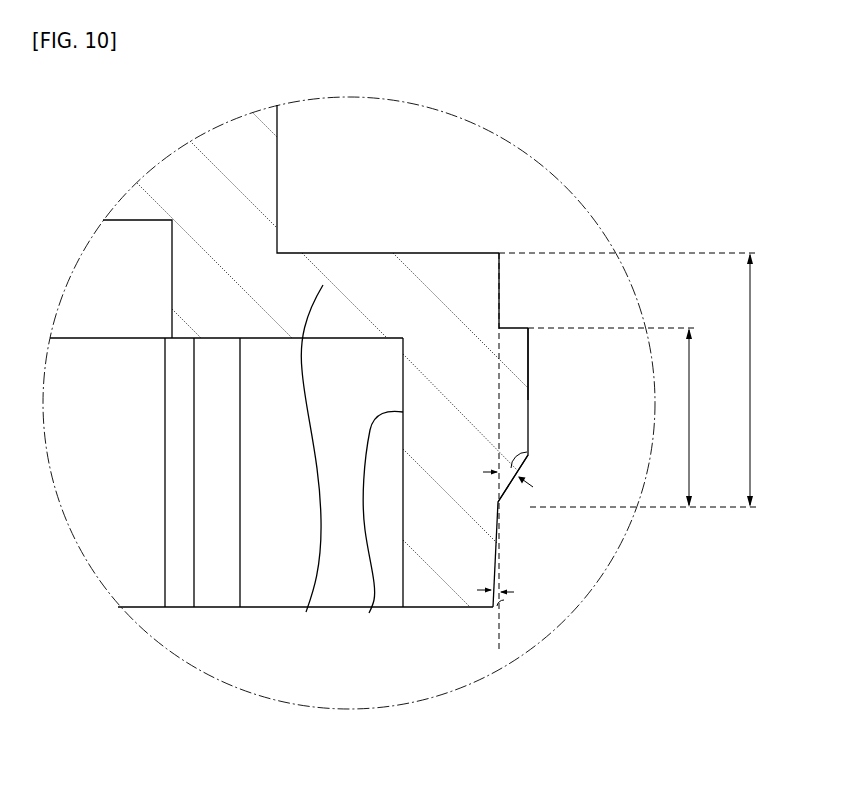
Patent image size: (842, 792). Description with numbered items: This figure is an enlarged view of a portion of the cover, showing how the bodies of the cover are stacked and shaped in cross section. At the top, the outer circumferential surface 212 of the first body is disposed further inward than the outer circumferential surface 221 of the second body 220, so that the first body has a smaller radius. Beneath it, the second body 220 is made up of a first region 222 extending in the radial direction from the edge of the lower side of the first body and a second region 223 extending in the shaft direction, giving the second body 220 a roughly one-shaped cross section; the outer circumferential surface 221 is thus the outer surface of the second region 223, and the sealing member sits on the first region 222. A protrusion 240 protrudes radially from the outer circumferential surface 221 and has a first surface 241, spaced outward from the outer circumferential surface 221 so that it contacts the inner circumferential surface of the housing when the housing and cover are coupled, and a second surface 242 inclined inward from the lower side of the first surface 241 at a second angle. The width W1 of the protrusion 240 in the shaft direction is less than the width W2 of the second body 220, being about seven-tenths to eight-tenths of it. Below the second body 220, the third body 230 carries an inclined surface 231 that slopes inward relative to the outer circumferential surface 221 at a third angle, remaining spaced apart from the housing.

The outer circumferential surface of the first body 212 is at (278, 177).
The outer circumferential surface of the second body 221 is at (500, 287).
The first surface 241 is at (528, 388).
The protrusion 240 is at (513, 418).
The second surface 242 is at (503, 501).
The inclined surface 231 is at (500, 567).
The third body 230 is at (466, 596).
The second body 220 is at (373, 657).
The first region 222 is at (306, 612).
The second region 223 is at (369, 613).
The width of the protrusion W1 is at (706, 417).
The width of the second body W2 is at (767, 380).